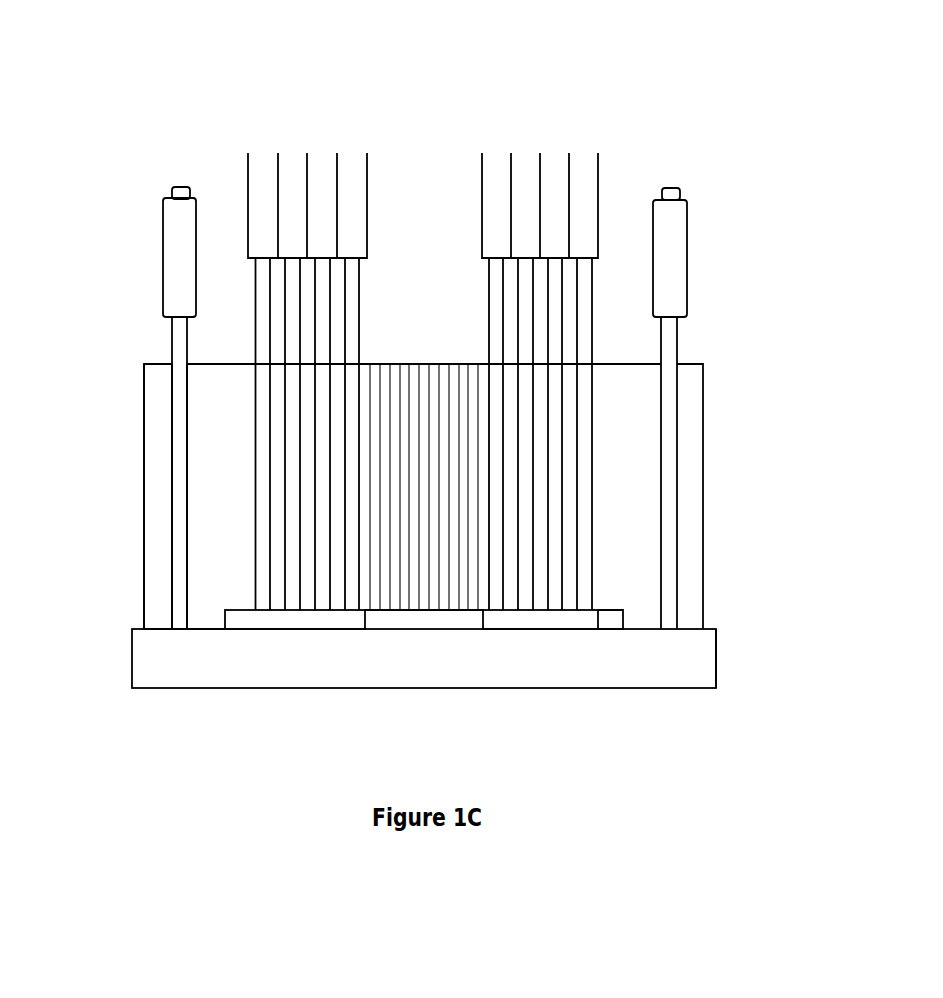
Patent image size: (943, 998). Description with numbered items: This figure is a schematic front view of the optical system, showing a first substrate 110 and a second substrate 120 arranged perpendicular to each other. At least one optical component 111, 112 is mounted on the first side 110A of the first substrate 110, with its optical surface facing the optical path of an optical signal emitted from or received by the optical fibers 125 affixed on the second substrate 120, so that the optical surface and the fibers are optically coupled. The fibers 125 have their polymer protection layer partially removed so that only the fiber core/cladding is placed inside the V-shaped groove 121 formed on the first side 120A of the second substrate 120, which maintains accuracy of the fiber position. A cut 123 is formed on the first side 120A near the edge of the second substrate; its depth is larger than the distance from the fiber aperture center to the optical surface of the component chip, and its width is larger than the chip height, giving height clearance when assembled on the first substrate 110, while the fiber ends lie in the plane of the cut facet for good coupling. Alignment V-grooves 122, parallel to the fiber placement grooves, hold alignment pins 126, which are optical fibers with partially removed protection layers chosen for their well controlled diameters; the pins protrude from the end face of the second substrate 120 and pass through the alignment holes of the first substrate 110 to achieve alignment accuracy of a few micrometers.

The first substrate 110 is at (163, 657).
The first side of the first substrate 110A is at (715, 637).
The optical component 111 is at (253, 620).
The optical component 112 is at (578, 620).
The second substrate 120 is at (697, 400).
The first side of the second substrate 120A is at (215, 512).
The V-shaped groove 121 is at (377, 375).
The alignment V-groove 122 is at (170, 450).
The cut 123 is at (618, 620).
The optical fiber 125 is at (588, 318).
The alignment pin 126 is at (178, 348).